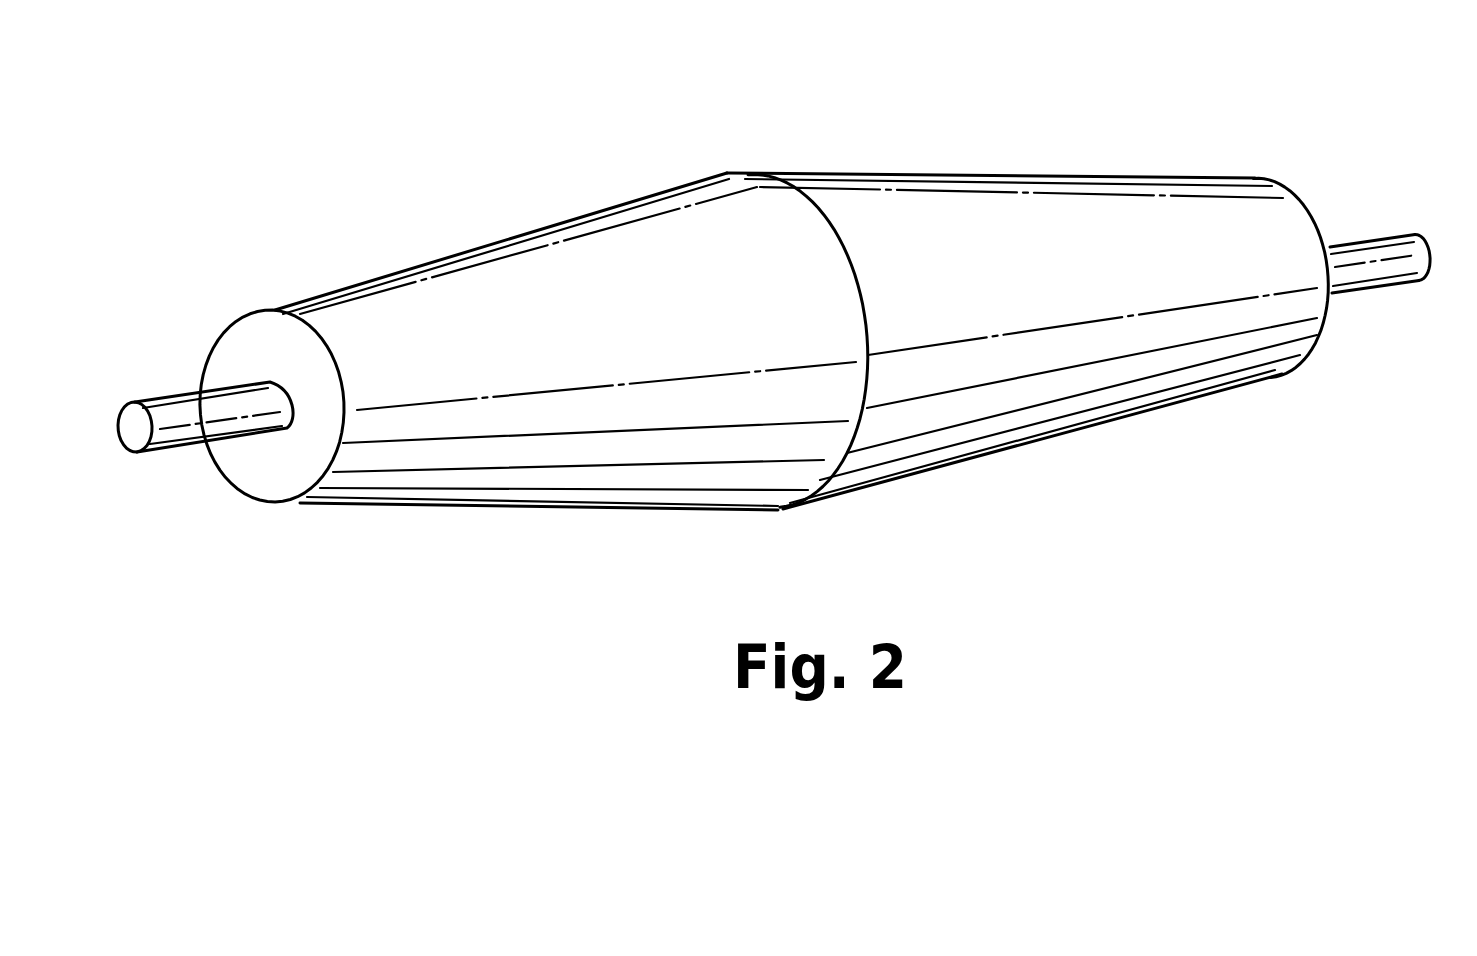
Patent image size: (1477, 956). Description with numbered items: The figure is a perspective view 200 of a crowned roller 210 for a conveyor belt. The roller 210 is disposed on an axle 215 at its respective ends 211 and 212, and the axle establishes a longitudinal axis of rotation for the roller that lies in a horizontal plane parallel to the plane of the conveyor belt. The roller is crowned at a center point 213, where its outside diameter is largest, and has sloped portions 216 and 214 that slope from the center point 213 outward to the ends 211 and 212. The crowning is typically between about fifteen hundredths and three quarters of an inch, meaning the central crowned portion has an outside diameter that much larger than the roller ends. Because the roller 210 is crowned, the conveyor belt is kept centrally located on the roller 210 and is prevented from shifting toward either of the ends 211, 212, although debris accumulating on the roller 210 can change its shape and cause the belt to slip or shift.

The roller assembly 200 is at (377, 148).
The crowned roller 210 is at (480, 494).
The end of the roller 211 is at (250, 343).
The end of the roller 212 is at (1307, 212).
The center point 213 is at (723, 173).
The sloped portion 214 is at (1090, 178).
The axle 215 is at (173, 413).
The sloped portion 216 is at (588, 214).